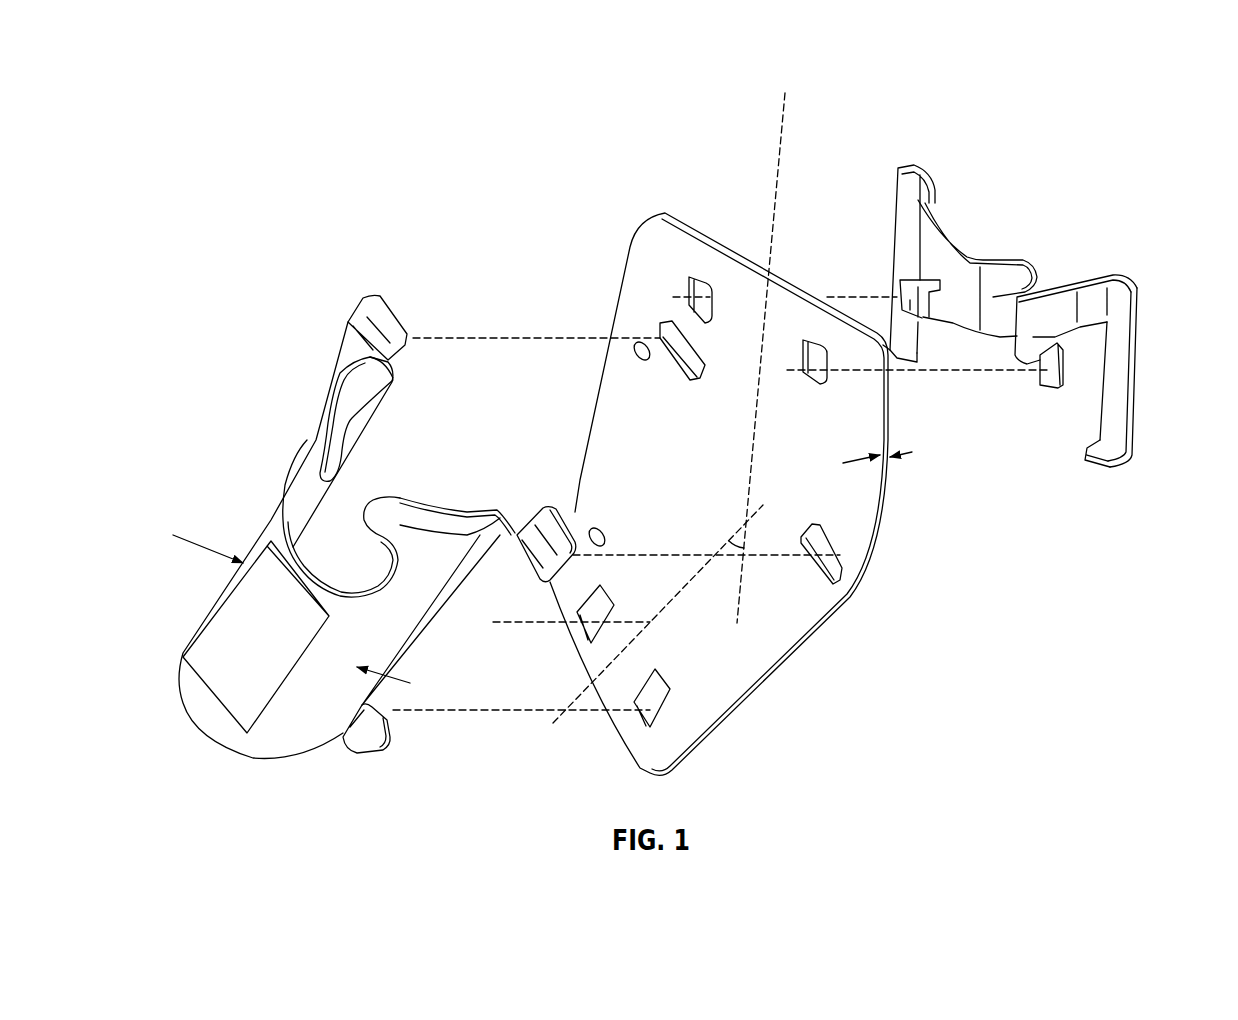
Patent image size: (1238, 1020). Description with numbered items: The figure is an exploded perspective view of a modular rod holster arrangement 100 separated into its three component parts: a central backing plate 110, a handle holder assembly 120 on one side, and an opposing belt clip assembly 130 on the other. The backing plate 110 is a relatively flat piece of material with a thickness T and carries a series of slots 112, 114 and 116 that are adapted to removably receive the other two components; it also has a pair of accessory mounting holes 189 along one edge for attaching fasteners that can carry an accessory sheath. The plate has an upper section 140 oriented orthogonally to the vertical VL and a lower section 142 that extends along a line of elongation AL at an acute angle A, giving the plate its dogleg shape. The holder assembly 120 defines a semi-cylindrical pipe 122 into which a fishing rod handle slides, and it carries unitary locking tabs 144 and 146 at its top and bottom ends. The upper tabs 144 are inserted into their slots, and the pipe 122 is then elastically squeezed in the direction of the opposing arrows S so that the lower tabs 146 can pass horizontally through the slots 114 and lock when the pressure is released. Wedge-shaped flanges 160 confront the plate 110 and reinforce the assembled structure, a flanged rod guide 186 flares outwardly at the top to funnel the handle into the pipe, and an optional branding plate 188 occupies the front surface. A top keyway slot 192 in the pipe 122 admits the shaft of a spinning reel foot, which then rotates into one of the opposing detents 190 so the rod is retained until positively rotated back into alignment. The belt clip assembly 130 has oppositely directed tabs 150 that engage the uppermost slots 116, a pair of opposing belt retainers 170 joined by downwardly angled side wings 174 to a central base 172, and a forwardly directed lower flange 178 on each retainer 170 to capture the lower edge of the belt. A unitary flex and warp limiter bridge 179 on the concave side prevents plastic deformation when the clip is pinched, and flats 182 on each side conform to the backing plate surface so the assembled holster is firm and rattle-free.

The rod holster arrangement 100 is at (850, 175).
The backing plate 110 is at (683, 532).
The slot 112 is at (694, 372).
The slot 114 is at (743, 745).
The slot 116 is at (690, 283).
The handle holder assembly 120 is at (203, 703).
The semi-cylindrical pipe 122 is at (407, 623).
The belt clip assembly 130 is at (1033, 312).
The upper section 140 is at (640, 296).
The lower section 142 is at (740, 657).
The locking tab 144 is at (357, 310).
The locking tab 146 is at (383, 747).
The tab 150 is at (915, 303).
The wedge-shaped flange 160 is at (347, 357).
The belt retainer 170 is at (900, 240).
The central base 172 is at (962, 250).
The side wing 174 is at (927, 200).
The lower flange 178 is at (897, 343).
The flex and warp limiter bridge 179 is at (1007, 295).
The flat 182 is at (960, 283).
The flanged rod guide 186 is at (340, 400).
The branding plate 188 is at (247, 633).
The accessory mounting hole 189 is at (636, 350).
The detent 190 is at (290, 512).
The keyway slot 192 is at (357, 490).
The vertical VL is at (780, 148).
The line of elongation AL is at (657, 622).
The acute angle A is at (733, 538).
The squeezing direction arrows S is at (207, 547).
The thickness T is at (905, 453).